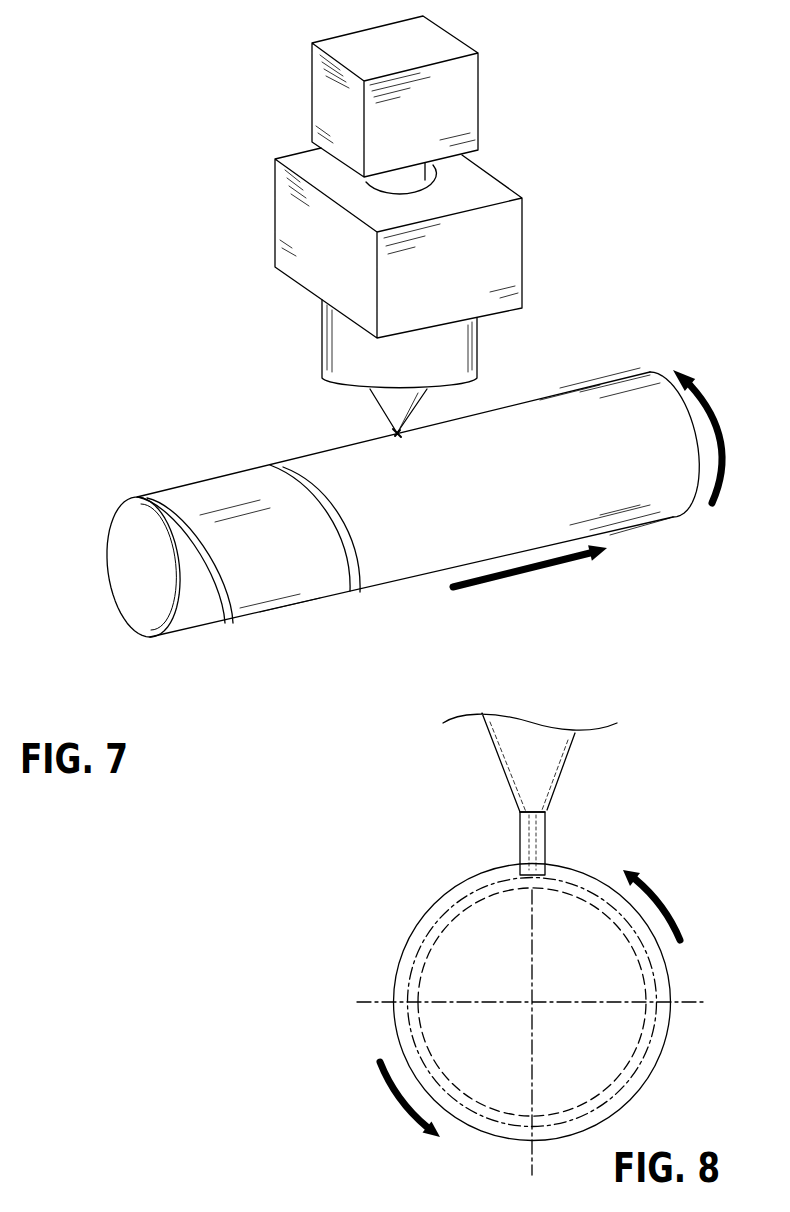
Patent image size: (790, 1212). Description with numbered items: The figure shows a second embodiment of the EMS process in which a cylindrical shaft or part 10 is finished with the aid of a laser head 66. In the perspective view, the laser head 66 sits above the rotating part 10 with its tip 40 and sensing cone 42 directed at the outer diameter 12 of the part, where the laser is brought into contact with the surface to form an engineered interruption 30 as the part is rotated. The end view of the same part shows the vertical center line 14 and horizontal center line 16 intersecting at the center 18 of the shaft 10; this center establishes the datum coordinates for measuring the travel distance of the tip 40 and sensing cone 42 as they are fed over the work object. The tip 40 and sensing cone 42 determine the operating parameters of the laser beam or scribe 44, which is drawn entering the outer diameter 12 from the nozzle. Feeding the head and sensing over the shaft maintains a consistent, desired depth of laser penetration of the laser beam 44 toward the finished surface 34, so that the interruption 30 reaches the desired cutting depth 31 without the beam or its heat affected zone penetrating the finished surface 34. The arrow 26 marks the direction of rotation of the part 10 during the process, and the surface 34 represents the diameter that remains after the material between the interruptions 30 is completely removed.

In FIG. 7, the cylindrical shaft or part 10 is at (157, 624).
In FIG. 8, the cylindrical shaft or part 10 is at (560, 910).
In FIG. 8, the outer diameter 12 is at (440, 898).
In FIG. 8, the vertical center line 14 is at (532, 965).
In FIG. 8, the horizontal center line 16 is at (700, 1005).
In FIG. 8, the center 18 is at (532, 1003).
In FIG. 8, the arrow 26 is at (397, 1107).
In FIG. 7, the interruption 30 is at (352, 596).
In FIG. 8, the interruption 30 is at (503, 868).
In FIG. 8, the desired cutting depth 31 is at (422, 940).
In FIG. 8, the finished surface 34 is at (597, 912).
In FIG. 7, the tip 40 is at (392, 431).
In FIG. 8, the tip 40 is at (538, 808).
In FIG. 7, the sensing cone 42 is at (384, 410).
In FIG. 8, the sensing cone 42 is at (503, 770).
In FIG. 8, the laser beam 44 is at (547, 833).
In FIG. 7, the laser head 66 is at (500, 248).